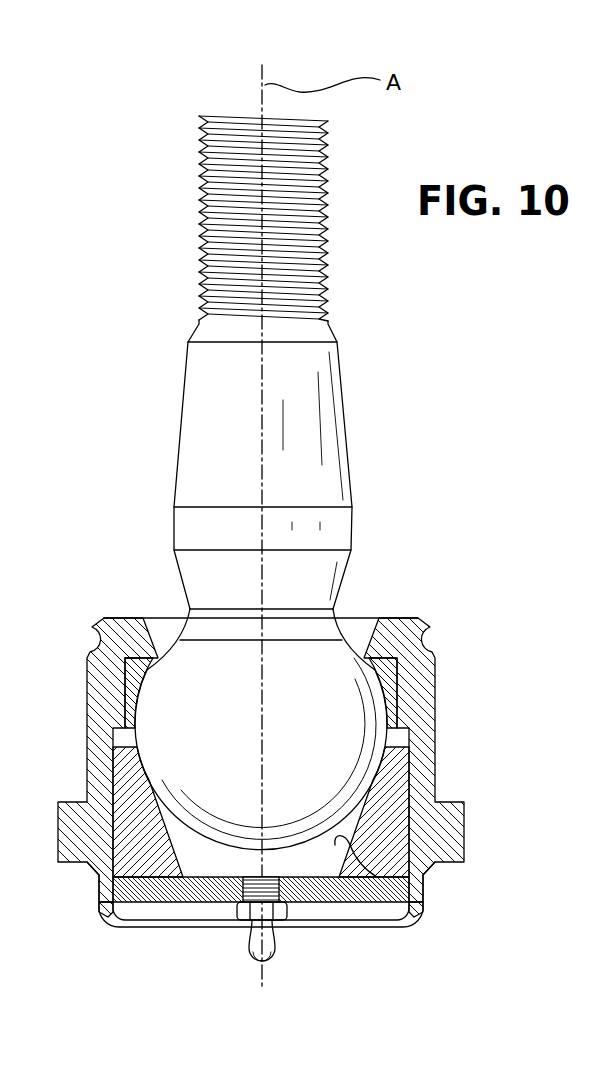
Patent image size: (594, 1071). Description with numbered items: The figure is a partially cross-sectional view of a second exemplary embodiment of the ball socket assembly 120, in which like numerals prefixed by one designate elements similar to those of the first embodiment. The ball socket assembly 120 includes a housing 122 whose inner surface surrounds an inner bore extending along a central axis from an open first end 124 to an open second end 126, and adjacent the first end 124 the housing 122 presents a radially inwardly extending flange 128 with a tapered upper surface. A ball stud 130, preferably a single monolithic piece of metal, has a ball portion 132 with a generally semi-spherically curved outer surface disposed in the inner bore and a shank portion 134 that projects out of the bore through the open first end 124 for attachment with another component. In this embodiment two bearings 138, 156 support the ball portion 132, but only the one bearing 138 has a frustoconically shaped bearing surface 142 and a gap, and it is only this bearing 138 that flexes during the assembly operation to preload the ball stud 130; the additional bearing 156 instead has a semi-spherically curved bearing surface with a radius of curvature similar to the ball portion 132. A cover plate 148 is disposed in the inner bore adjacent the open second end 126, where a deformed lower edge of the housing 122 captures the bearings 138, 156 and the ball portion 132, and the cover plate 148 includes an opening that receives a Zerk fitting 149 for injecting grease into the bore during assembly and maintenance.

The ball socket assembly 120 is at (77, 268).
The housing 122 is at (443, 667).
The first end 124 is at (362, 617).
The second end 126 is at (352, 920).
The flange 128 is at (147, 656).
The ball stud 130 is at (358, 437).
The ball portion 132 is at (221, 732).
The shank portion 134 is at (202, 428).
The bearing 138 is at (402, 785).
The frustoconically shaped bearing surface 142 is at (405, 870).
The cover plate 148 is at (158, 900).
The Zerk fitting 149 is at (278, 950).
The additional bearing 156 is at (396, 642).